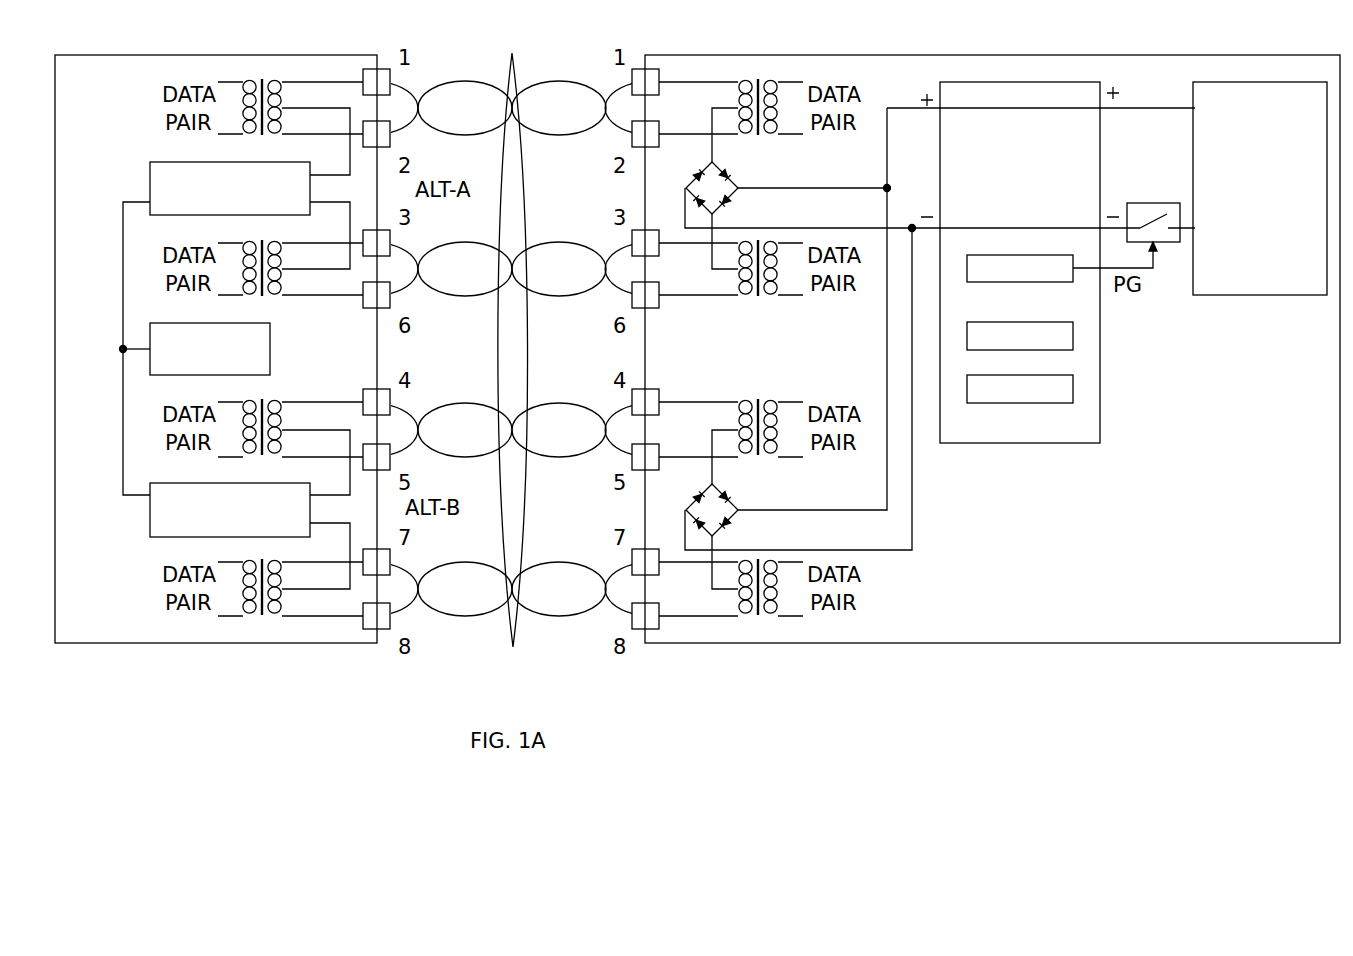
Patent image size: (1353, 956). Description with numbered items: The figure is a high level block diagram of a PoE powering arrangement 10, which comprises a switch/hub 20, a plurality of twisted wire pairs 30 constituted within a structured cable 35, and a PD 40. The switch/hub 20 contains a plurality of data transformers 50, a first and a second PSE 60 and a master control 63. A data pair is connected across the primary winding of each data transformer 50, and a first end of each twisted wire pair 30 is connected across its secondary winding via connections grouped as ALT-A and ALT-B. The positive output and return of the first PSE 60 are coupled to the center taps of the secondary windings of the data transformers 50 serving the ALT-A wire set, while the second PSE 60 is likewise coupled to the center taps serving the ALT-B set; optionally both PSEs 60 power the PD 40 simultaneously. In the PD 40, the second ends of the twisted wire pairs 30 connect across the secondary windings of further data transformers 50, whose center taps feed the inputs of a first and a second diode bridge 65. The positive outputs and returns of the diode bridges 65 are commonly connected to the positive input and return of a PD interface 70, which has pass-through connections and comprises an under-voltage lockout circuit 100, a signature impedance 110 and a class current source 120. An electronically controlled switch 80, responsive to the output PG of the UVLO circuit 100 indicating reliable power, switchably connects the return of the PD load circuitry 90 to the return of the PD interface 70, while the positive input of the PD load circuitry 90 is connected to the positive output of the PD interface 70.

The PoE powering arrangement 10 is at (808, 10).
The switch/hub 20 is at (163, 645).
The twisted wire pairs 30 is at (552, 135).
The structured cable 35 is at (513, 647).
The PD 40 is at (1020, 55).
The data transformers 50 is at (270, 78).
The PSE 60 is at (150, 175).
The master control 63 is at (190, 322).
The diode bridge 65 is at (722, 172).
The PD interface 70 is at (993, 443).
The electronically controlled switch 80 is at (1140, 203).
The PD load circuitry 90 is at (1248, 295).
The under-voltage lockout (UVLO) circuit 100 is at (1020, 282).
The signature impedance 110 is at (1073, 336).
The class current source 120 is at (1020, 403).